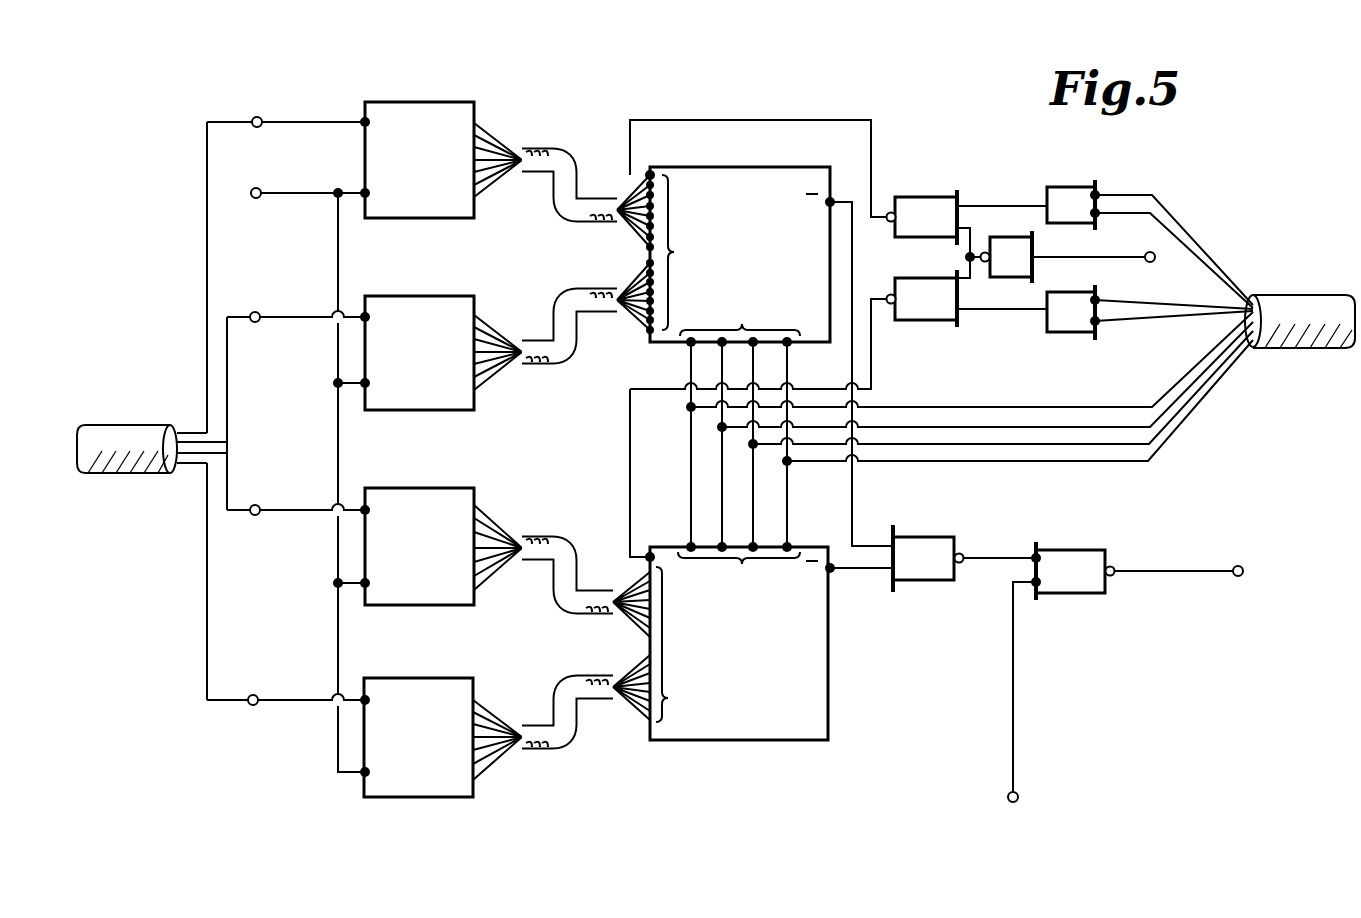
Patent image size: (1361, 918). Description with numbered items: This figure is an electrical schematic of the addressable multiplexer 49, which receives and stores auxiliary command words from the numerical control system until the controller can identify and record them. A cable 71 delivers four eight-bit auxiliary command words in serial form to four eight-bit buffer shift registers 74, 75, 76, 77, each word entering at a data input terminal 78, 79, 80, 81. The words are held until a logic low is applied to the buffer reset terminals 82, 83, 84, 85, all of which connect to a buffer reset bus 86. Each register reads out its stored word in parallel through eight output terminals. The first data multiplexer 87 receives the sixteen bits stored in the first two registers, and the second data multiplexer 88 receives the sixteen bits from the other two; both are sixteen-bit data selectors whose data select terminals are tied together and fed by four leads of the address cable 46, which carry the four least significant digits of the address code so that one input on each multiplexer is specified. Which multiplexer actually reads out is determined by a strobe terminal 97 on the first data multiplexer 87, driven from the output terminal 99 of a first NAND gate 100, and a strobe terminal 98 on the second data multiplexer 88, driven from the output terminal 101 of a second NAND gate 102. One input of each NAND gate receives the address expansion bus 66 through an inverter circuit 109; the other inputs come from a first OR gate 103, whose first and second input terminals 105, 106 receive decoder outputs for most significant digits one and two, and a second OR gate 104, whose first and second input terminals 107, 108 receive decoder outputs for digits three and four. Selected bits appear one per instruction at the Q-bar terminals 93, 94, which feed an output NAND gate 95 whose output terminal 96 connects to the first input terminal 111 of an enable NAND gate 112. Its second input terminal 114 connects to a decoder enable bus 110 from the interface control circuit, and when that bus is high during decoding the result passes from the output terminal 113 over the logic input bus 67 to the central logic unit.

The address cable 46 is at (1310, 295).
The addressable multiplexer 49 is at (797, 114).
The address expansion bus 66 is at (1153, 261).
The logic input bus 67 is at (1239, 566).
The cable 71 is at (146, 424).
The buffer shift register 74 is at (405, 102).
The buffer shift register 75 is at (416, 296).
The buffer shift register 76 is at (446, 488).
The buffer shift register 77 is at (420, 678).
The data input terminal 78 is at (365, 120).
The data input terminal 79 is at (365, 315).
The data input terminal 80 is at (365, 508).
The data input terminal 81 is at (364, 698).
The buffer reset terminal 82 is at (365, 191).
The buffer reset terminal 83 is at (365, 385).
The buffer reset terminal 84 is at (365, 585).
The buffer reset terminal 85 is at (362, 775).
The buffer reset bus 86 is at (259, 189).
The first data multiplexer 87 is at (776, 167).
The second data multiplexer 88 is at (829, 697).
The Q-bar terminal 93 is at (830, 200).
The Q-bar terminal 94 is at (833, 571).
The output NAND gate 95 is at (930, 537).
The output terminal 96 is at (963, 555).
The strobe terminal 97 is at (650, 172).
The strobe terminal 98 is at (648, 554).
The output terminal 99 is at (891, 212).
The first NAND gate 100 is at (915, 197).
The output terminal 101 is at (891, 304).
The second NAND gate 102 is at (940, 320).
The first OR gate 103 is at (1065, 187).
The second OR gate 104 is at (1065, 332).
The first input terminal 105 is at (1098, 192).
The second input terminal 106 is at (1098, 216).
The first input terminal 107 is at (1097, 297).
The second input terminal 108 is at (1098, 324).
The inverter circuit 109 is at (1013, 237).
The decoder enable bus 110 is at (1019, 796).
The first input terminal 111 is at (1034, 556).
The enable NAND gate 112 is at (1076, 550).
The output terminal 113 is at (1113, 575).
The second input terminal 114 is at (1034, 585).